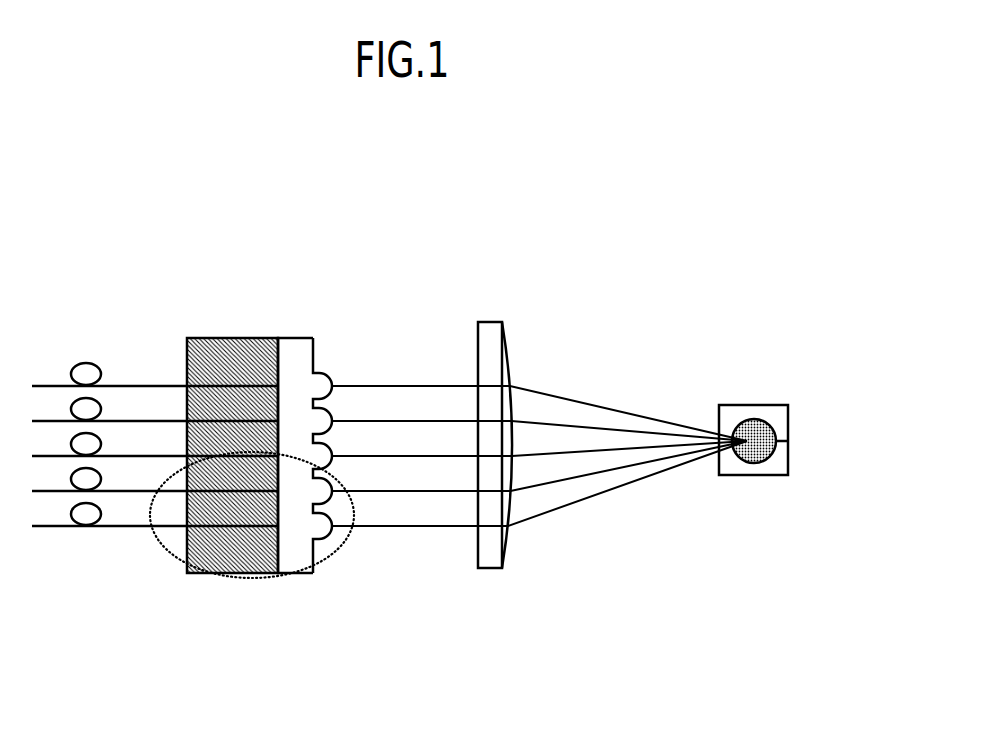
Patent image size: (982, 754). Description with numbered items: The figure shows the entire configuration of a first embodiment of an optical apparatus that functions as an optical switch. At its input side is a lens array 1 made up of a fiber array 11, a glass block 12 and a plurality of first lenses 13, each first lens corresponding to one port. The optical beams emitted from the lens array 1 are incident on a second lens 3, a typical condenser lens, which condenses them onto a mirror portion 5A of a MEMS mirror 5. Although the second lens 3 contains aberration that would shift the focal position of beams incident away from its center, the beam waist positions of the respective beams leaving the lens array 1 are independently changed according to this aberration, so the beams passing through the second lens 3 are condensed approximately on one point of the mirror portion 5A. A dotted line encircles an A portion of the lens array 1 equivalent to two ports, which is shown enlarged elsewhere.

The lens array 1 is at (405, 216).
The fiber array 11 is at (217, 338).
The glass block 12 is at (295, 338).
The first lenses 13 is at (318, 366).
The second lens 3 is at (493, 322).
The MEMS mirror 5 is at (754, 405).
The mirror portion 5A is at (755, 463).
The A portion A is at (337, 555).